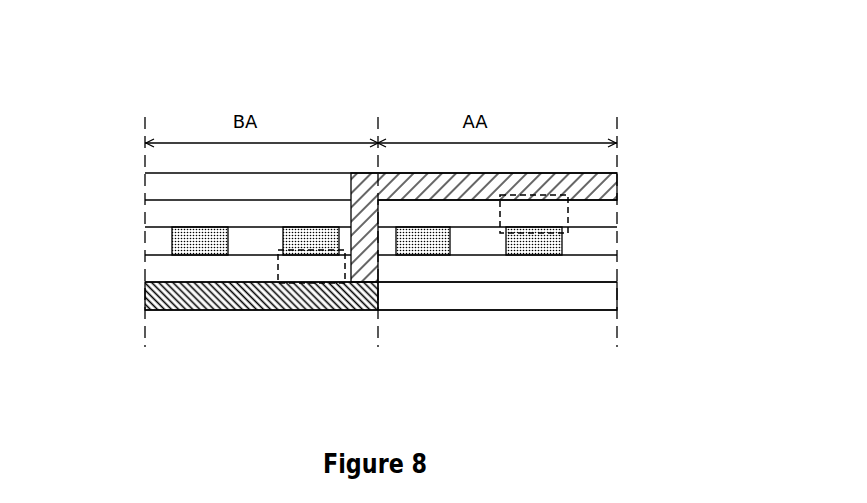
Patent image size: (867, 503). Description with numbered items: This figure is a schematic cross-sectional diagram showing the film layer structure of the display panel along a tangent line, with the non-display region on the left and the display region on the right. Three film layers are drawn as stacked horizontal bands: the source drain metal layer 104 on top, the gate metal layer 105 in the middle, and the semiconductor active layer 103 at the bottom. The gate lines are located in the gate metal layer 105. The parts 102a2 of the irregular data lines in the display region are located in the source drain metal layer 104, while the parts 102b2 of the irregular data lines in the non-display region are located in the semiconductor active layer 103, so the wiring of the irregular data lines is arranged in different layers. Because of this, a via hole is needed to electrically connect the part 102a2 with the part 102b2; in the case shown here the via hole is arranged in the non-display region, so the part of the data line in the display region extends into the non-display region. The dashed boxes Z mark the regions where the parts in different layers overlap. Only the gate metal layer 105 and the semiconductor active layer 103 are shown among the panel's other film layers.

The source drain metal layer 104 is at (112, 186).
The gate metal layer 105 is at (115, 242).
The semiconductor active layer 103 is at (115, 296).
The part of the irregular data line in the display region 102a2 is at (588, 190).
The part of the irregular data line in the non-display region 102b2 is at (238, 298).
The overlap region Z is at (312, 270).